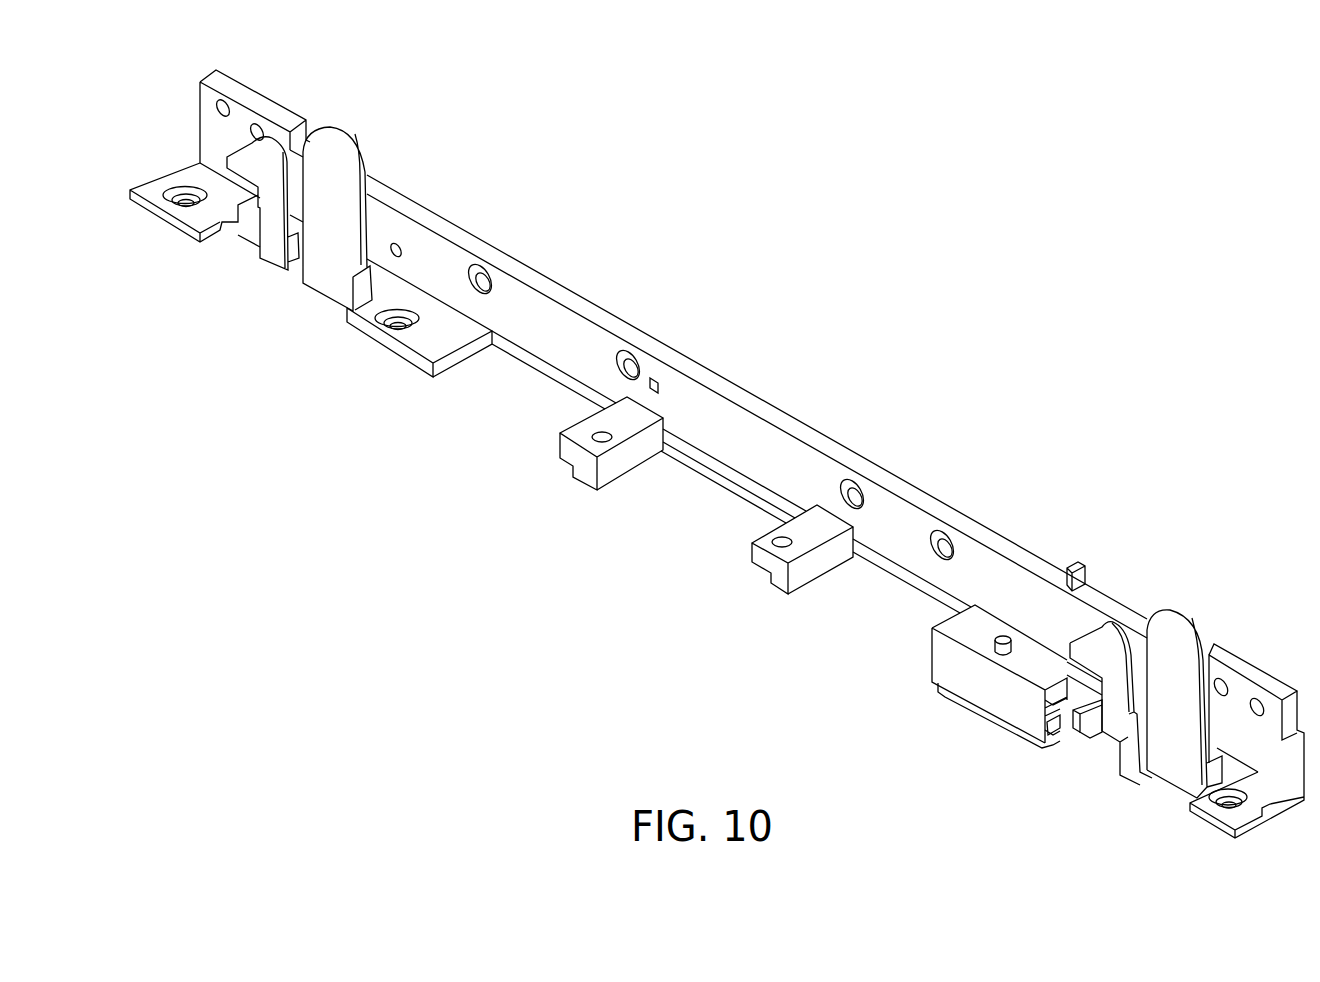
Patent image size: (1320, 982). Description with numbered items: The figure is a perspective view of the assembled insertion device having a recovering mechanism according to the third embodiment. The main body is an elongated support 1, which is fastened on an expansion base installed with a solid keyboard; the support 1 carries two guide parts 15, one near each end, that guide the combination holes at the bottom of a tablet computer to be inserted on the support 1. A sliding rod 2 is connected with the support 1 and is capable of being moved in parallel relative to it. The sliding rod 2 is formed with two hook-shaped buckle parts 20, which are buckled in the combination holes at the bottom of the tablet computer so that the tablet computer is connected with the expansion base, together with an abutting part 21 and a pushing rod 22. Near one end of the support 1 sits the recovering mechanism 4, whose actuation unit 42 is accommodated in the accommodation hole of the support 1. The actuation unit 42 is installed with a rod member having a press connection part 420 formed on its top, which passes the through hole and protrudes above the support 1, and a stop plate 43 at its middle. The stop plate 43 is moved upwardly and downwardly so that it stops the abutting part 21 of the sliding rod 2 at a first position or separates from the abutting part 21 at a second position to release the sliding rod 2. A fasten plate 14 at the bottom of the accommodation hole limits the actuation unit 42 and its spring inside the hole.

The support 1 is at (762, 435).
The sliding rod 2 is at (655, 465).
The recovering mechanism 4 is at (978, 633).
The fasten plate 14 is at (999, 721).
The guide part 15 is at (330, 168).
The buckle part 20 is at (255, 162).
The abutting part 21 is at (1080, 726).
The pushing rod 22 is at (1080, 572).
The actuation unit 42 is at (1001, 653).
The stop plate 43 is at (1053, 733).
The press connection part 420 is at (1002, 637).